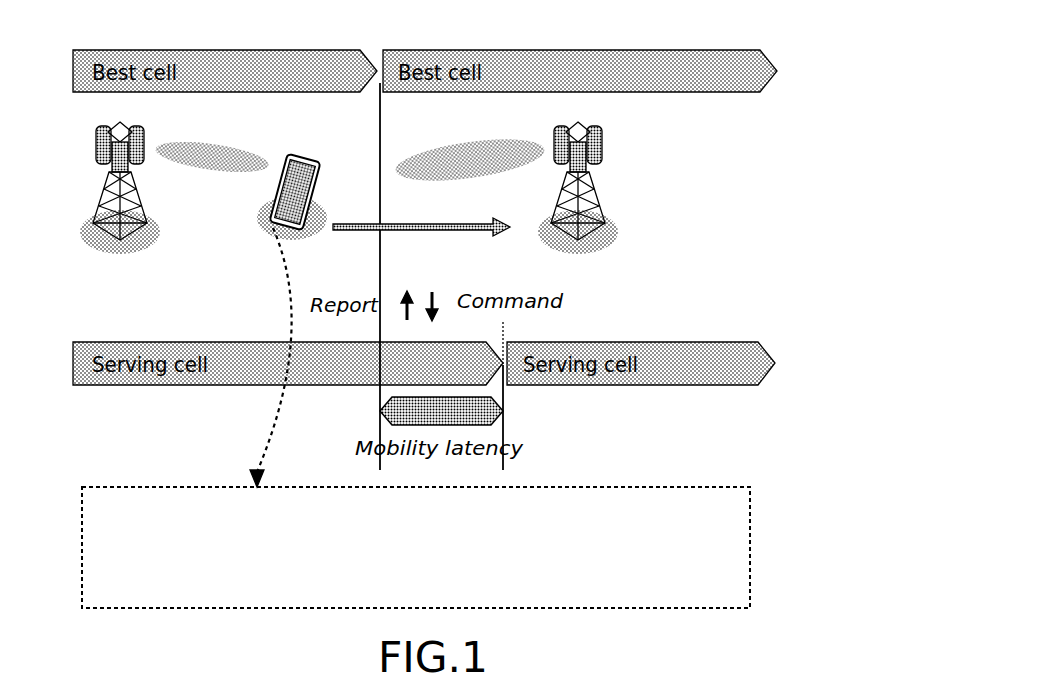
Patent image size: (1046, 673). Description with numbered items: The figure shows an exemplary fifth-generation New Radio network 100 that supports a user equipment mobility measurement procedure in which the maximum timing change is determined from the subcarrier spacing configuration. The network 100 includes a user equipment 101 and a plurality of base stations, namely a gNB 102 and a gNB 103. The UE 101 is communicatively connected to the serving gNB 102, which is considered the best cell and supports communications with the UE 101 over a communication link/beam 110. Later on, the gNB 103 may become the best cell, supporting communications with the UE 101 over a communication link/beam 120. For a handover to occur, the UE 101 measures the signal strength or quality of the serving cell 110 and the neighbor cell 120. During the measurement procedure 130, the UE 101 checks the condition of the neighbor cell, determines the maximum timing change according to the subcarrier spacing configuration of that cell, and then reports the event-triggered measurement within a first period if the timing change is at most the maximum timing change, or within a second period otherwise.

The 5G New Radio network 100 is at (890, 44).
The user equipment 101 is at (313, 155).
The gNB 102 is at (118, 241).
The gNB 103 is at (577, 241).
The communication link/beam 110 is at (216, 151).
The communication link/beam 120 is at (468, 157).
The measurement procedure 130 is at (151, 486).